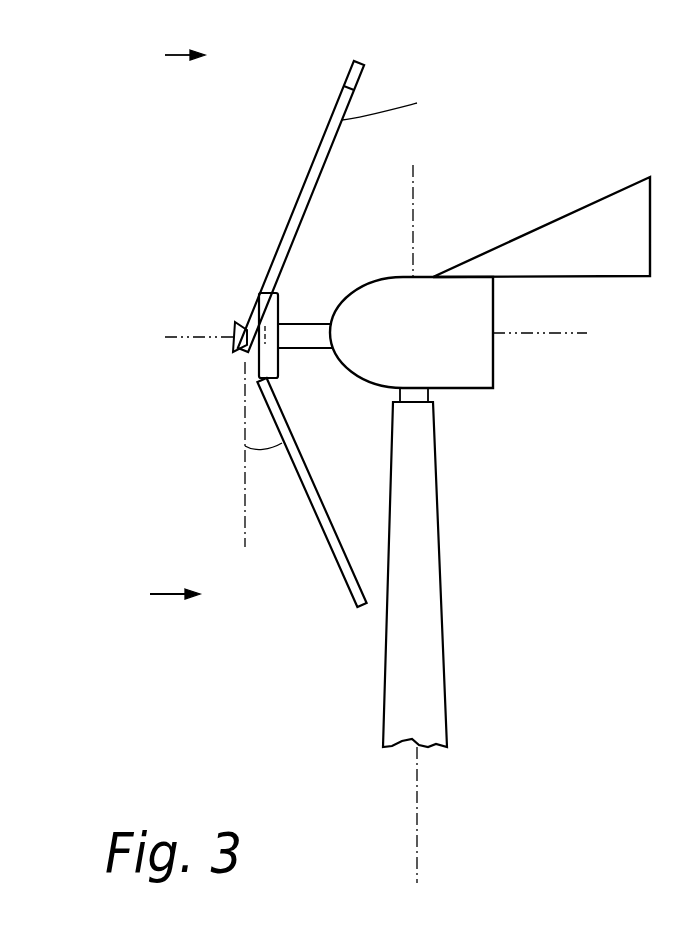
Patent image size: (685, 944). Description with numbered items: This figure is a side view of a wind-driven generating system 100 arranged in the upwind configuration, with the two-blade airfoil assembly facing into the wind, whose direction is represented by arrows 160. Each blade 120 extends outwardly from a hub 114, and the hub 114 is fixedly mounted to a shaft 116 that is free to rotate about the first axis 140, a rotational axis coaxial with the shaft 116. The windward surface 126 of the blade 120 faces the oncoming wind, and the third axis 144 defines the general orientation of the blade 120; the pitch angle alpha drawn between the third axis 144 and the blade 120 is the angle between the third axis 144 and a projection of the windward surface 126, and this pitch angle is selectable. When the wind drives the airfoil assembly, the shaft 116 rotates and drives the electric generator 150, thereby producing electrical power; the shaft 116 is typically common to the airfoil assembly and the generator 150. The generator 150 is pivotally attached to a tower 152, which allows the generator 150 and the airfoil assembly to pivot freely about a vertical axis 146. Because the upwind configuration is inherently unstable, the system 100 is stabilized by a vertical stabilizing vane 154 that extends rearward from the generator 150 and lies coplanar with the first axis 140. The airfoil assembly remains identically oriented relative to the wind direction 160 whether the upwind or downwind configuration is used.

The wind-driven generating system 100 is at (580, 92).
The hub 114 is at (272, 358).
The shaft 116 is at (302, 335).
The blade 120 is at (288, 364).
The windward surface 126 is at (284, 225).
The first axis 140 is at (215, 332).
The third axis 144 is at (238, 487).
The vertical axis 146 is at (420, 178).
The electric generator 150 is at (465, 389).
The tower 152 is at (422, 653).
The vertical stabilizing vane 154 is at (585, 250).
The arrows 160 is at (152, 327).